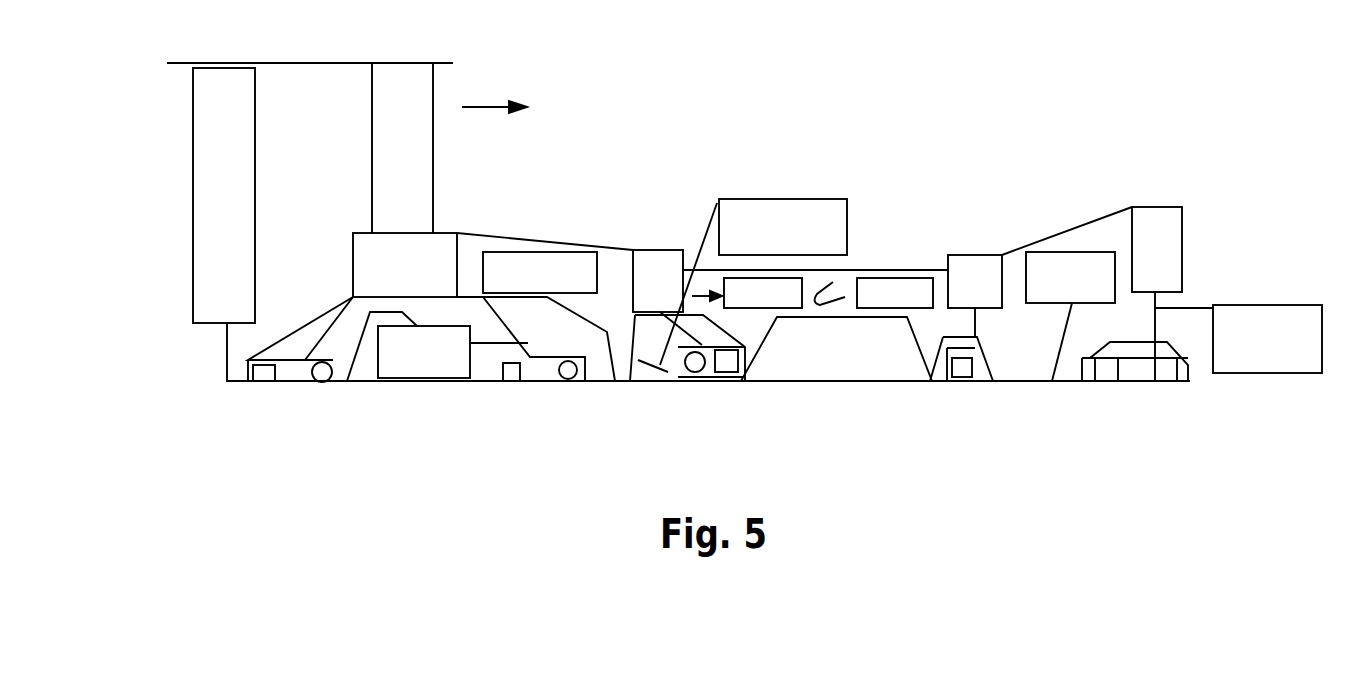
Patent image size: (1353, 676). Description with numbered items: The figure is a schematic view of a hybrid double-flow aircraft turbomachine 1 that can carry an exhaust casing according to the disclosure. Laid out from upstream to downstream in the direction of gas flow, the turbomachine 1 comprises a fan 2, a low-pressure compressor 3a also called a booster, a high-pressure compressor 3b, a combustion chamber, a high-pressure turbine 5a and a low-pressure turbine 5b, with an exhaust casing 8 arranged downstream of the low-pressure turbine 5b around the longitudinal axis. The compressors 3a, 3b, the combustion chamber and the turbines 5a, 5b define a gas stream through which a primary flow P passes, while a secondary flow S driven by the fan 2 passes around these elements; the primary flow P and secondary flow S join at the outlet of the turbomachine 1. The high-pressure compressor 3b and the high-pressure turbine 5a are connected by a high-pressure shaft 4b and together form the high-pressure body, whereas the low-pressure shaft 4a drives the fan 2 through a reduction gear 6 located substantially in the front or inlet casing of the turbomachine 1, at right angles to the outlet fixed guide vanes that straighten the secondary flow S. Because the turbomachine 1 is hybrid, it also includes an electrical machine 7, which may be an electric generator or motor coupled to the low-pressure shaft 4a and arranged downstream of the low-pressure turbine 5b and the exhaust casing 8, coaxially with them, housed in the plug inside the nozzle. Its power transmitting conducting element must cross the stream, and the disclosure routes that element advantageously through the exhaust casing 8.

The turbomachine 1 is at (612, 128).
The fan 2 is at (202, 200).
The low-pressure compressor 3a is at (542, 262).
The high-pressure compressor 3b is at (757, 303).
The low-pressure shaft 4a is at (630, 382).
The high-pressure shaft 4b is at (832, 317).
The high-pressure turbine 5a is at (882, 303).
The low-pressure turbine 5b is at (1035, 298).
The reduction gear 6 is at (412, 365).
The electrical machine 7 is at (1252, 365).
The exhaust casing 8 is at (1172, 240).
The primary flow P is at (694, 300).
The secondary flow S is at (492, 105).